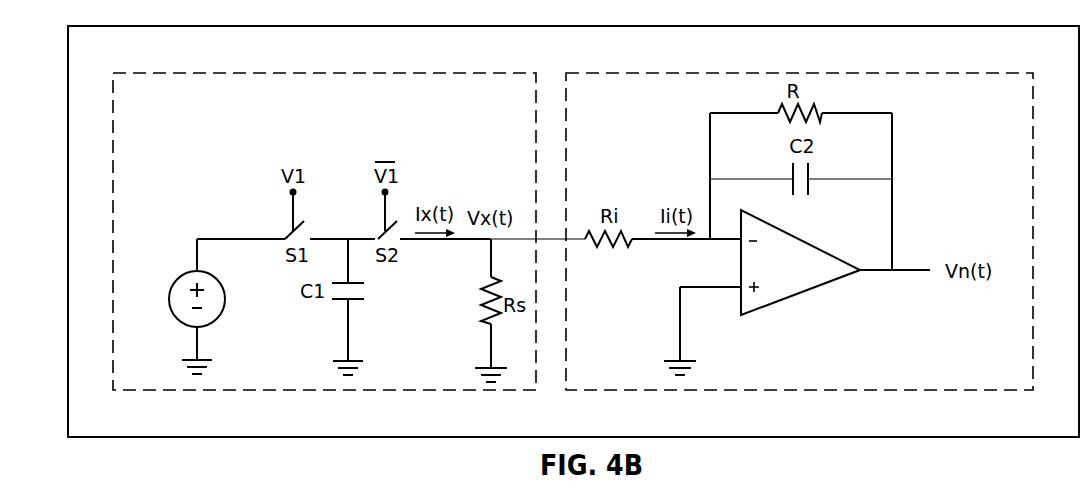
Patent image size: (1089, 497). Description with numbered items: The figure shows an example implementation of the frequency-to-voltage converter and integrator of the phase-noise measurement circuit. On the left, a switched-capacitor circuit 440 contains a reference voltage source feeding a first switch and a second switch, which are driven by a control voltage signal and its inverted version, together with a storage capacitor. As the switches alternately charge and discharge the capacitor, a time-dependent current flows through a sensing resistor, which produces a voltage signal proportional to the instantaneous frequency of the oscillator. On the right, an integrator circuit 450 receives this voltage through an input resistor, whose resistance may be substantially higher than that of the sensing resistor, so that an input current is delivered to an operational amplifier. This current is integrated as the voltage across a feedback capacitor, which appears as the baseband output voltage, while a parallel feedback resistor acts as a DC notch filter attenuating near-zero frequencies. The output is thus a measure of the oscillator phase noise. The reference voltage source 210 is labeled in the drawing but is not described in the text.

The switched-capacitor circuit 440 is at (177, 110).
The integrator circuit 450 is at (1006, 110).
The reference voltage source 210 is at (226, 304).